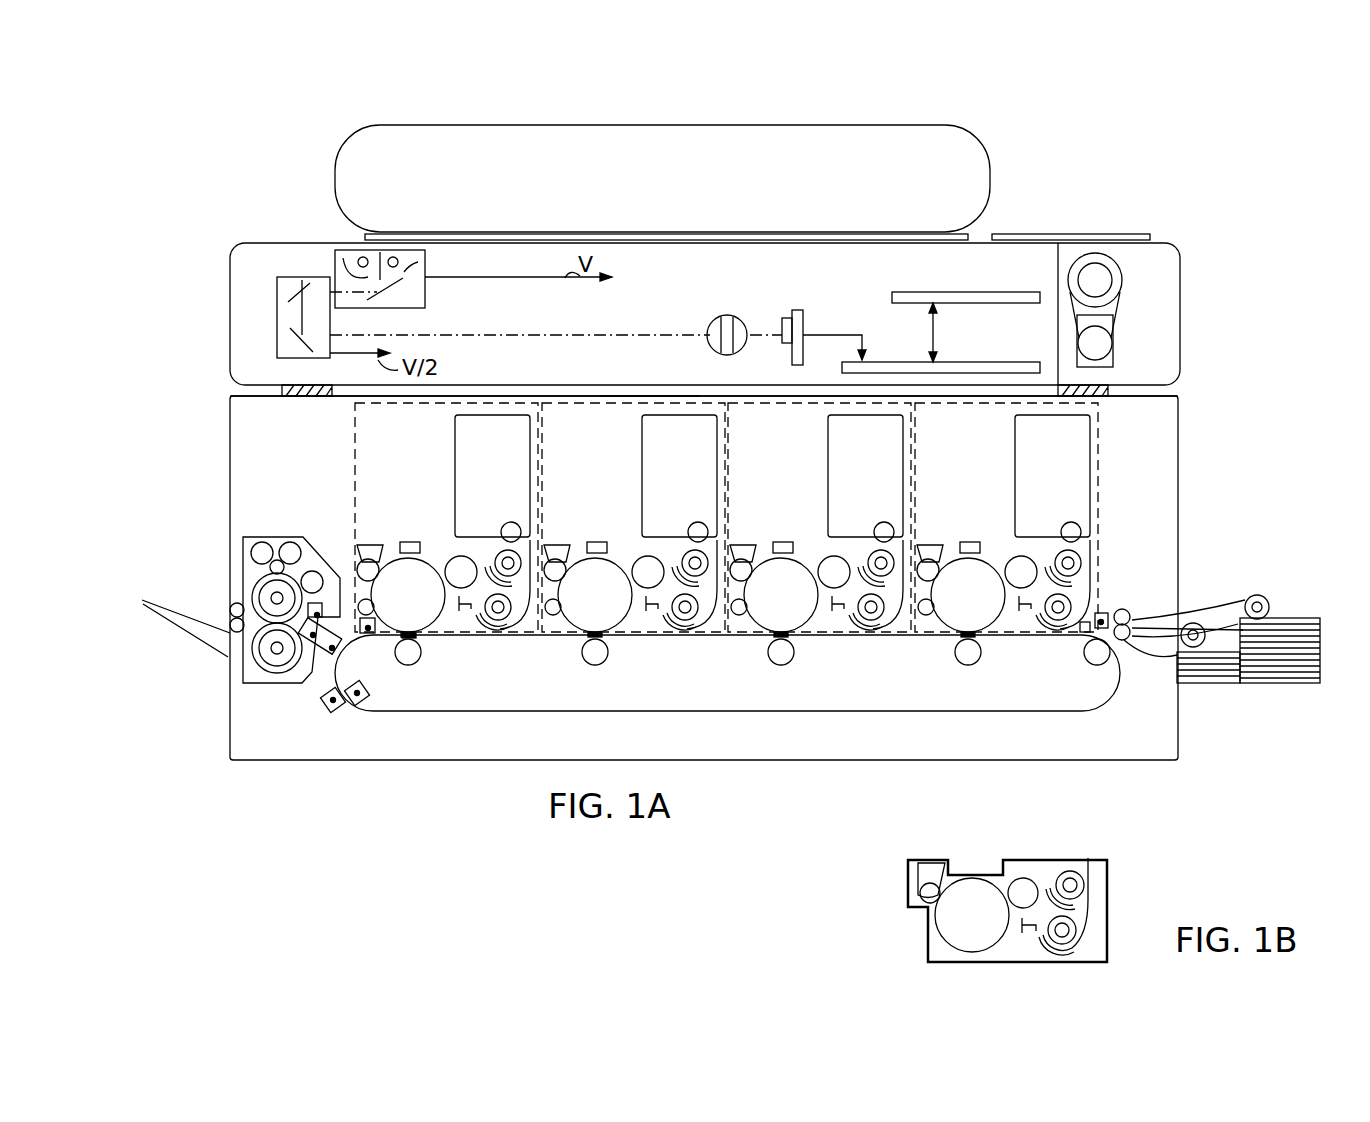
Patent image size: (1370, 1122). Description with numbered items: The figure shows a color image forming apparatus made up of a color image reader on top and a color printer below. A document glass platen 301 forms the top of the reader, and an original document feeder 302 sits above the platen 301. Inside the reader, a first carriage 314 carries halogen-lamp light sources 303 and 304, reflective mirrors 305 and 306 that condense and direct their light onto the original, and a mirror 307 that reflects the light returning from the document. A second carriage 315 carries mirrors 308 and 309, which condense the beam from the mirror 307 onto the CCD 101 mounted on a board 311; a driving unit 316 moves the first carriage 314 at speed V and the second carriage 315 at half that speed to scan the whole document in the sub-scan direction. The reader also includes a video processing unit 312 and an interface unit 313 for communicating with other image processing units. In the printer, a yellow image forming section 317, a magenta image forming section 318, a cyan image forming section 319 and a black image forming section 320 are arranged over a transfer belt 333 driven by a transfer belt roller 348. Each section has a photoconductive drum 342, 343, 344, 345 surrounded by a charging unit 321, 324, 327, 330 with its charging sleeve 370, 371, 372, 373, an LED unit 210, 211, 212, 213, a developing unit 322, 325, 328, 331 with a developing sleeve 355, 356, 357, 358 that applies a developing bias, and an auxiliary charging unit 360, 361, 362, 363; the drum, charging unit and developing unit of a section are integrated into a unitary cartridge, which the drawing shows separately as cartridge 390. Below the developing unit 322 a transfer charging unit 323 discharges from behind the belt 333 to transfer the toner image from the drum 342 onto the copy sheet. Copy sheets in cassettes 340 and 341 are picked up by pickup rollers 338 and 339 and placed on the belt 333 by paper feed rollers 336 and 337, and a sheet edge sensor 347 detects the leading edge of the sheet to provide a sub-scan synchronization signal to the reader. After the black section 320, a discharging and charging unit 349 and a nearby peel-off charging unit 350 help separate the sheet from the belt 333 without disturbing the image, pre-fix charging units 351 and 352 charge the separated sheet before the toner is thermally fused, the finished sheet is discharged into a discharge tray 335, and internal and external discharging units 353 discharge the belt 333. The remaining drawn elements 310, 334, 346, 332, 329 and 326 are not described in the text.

In FIG. 1A, the original document feeder 302 is at (440, 140).
In FIG. 1A, the document glass platen 301 is at (437, 240).
In FIG. 1A, the Y image forming section 317 is at (1022, 236).
In FIG. 1A, the light source 304 is at (360, 257).
In FIG. 1A, the reflective mirror 306 is at (345, 270).
In FIG. 1A, the reflective mirror 305 is at (402, 266).
In FIG. 1A, the light source 303 is at (405, 280).
In FIG. 1A, the first carriage 314 is at (410, 300).
In FIG. 1A, the mirror 307 is at (383, 305).
In FIG. 1A, the mirror 308 is at (277, 294).
In FIG. 1A, the second carriage 315 is at (277, 320).
In FIG. 1A, the mirror 309 is at (278, 333).
In FIG. 1A, the lens 310 is at (722, 316).
In FIG. 1A, the CCD 101 is at (782, 320).
In FIG. 1A, the board 311 is at (798, 310).
In FIG. 1A, the interface unit 313 is at (900, 292).
In FIG. 1A, the video processing unit 312 is at (1010, 362).
In FIG. 1A, the driving unit 316 is at (1180, 305).
In FIG. 1A, the M image forming section 318 is at (798, 400).
In FIG. 1A, the C image forming section 319 is at (598, 398).
In FIG. 1A, the K image forming section 320 is at (355, 430).
In FIG. 1A, the developing unit 331 is at (457, 433).
In FIG. 1A, the developing unit 328 is at (642, 433).
In FIG. 1A, the developing unit 325 is at (828, 433).
In FIG. 1A, the developing unit 322 is at (1013, 433).
In FIG. 1A, the charging unit 330 is at (360, 546).
In FIG. 1A, the charging unit 327 is at (547, 546).
In FIG. 1A, the charging unit 324 is at (733, 546).
In FIG. 1A, the charging unit 321 is at (920, 546).
In FIG. 1B, the charging unit 321 is at (928, 865).
In FIG. 1A, the paper feed cassette 334 is at (270, 538).
In FIG. 1A, the developing sleeve 358 is at (462, 560).
In FIG. 1A, the developing sleeve 357 is at (648, 560).
In FIG. 1A, the developing sleeve 356 is at (834, 560).
In FIG. 1A, the developing sleeve 355 is at (1020, 560).
In FIG. 1B, the developing sleeve 355 is at (1025, 878).
In FIG. 1A, the sheet edge sensor 347 is at (1102, 613).
In FIG. 1A, the pre-fix charging unit 352 is at (312, 604).
In FIG. 1A, the LED unit 213 is at (412, 542).
In FIG. 1A, the LED unit 212 is at (598, 542).
In FIG. 1A, the LED unit 211 is at (784, 542).
In FIG. 1A, the LED unit 210 is at (972, 542).
In FIG. 1A, the discharge tray 335 is at (167, 604).
In FIG. 1A, the auxiliary charging unit 363 is at (362, 604).
In FIG. 1A, the charging sleeve 373 is at (370, 568).
In FIG. 1A, the charging sleeve 372 is at (558, 568).
In FIG. 1A, the charging sleeve 371 is at (744, 568).
In FIG. 1A, the charging sleeve 370 is at (931, 568).
In FIG. 1A, the sensor 346 is at (1109, 620).
In FIG. 1A, the paper feed roller 336 is at (1130, 613).
In FIG. 1A, the pickup roller 339 is at (1258, 595).
In FIG. 1A, the cassette 341 is at (1296, 618).
In FIG. 1A, the photoconductive drum 345 is at (425, 612).
In FIG. 1A, the auxiliary charging unit 362 is at (552, 616).
In FIG. 1A, the auxiliary charging unit 361 is at (735, 613).
In FIG. 1A, the auxiliary charging unit 360 is at (922, 613).
In FIG. 1A, the transfer roller 332 is at (415, 655).
In FIG. 1A, the photoconductive drum 344 is at (582, 612).
In FIG. 1A, the transfer roller 329 is at (607, 650).
In FIG. 1A, the photoconductive drum 343 is at (768, 610).
In FIG. 1A, the transfer roller 326 is at (792, 650).
In FIG. 1A, the photoconductive drum 342 is at (950, 612).
In FIG. 1B, the photoconductive drum 342 is at (948, 925).
In FIG. 1A, the transfer charging unit 323 is at (980, 650).
In FIG. 1A, the transfer belt roller 348 is at (1100, 657).
In FIG. 1A, the paper feed roller 337 is at (1124, 641).
In FIG. 1A, the pre-fix charging unit 351 is at (320, 648).
In FIG. 1A, the internal and external discharging units 353 is at (340, 706).
In FIG. 1A, the peel-off charging unit 350 is at (368, 633).
In FIG. 1A, the discharging and charging unit 349 is at (410, 640).
In FIG. 1A, the transfer belt 333 is at (585, 712).
In FIG. 1A, the pickup roller 338 is at (1200, 648).
In FIG. 1A, the cassette 340 is at (1290, 683).
In FIG. 1B, the cartridge 390 is at (1108, 897).